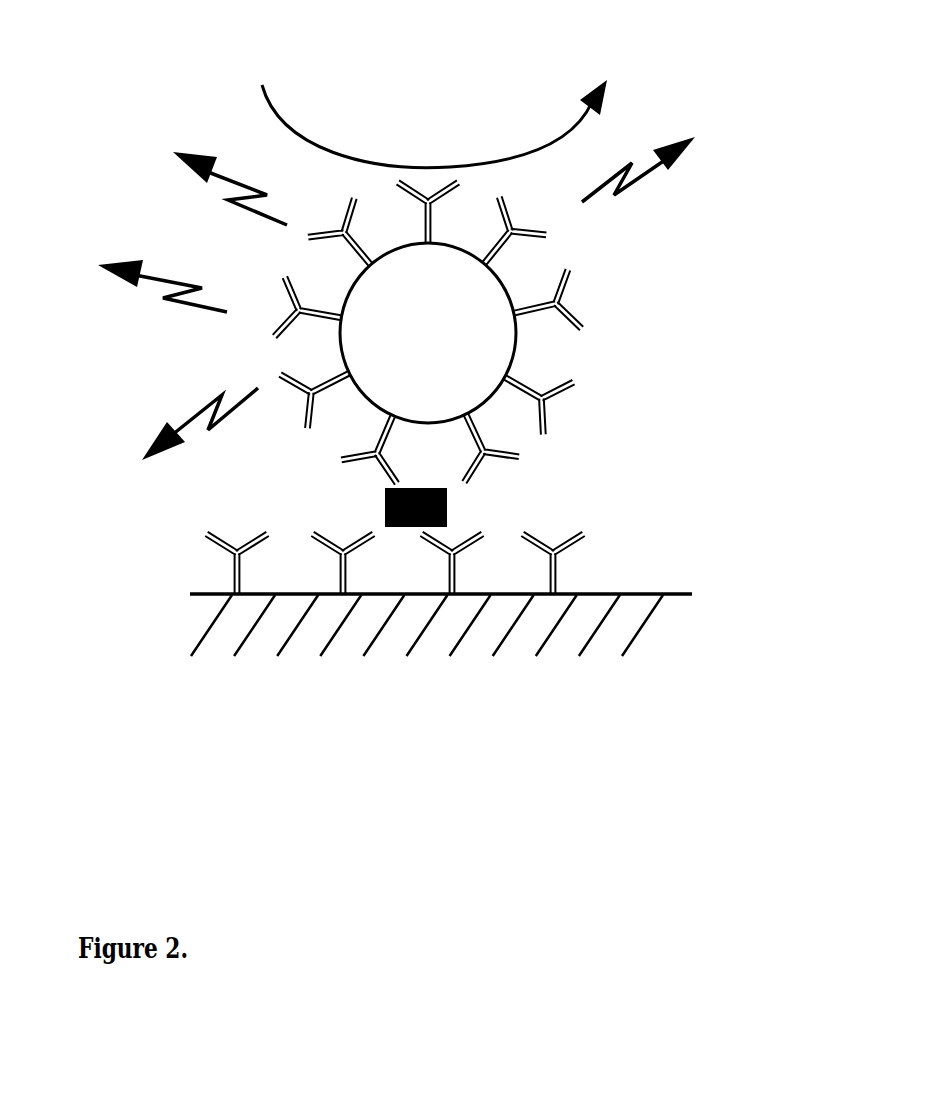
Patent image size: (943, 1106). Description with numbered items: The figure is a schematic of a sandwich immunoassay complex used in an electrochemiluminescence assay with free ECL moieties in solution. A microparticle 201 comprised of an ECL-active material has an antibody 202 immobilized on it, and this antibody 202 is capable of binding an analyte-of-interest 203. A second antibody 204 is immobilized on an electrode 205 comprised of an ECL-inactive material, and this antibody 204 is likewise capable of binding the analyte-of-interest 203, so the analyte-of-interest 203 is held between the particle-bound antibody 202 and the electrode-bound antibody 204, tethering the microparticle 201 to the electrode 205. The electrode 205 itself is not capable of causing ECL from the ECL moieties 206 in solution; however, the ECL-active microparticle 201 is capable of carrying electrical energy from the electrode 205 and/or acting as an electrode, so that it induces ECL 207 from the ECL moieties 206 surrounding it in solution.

The microparticle 201 is at (482, 315).
The antibody 202 is at (580, 378).
The analyte-of-interest 203 is at (450, 507).
The antibody 204 is at (598, 553).
The electrode 205 is at (690, 620).
The ECL moieties 206 is at (418, 102).
The ECL 207 is at (364, 248).